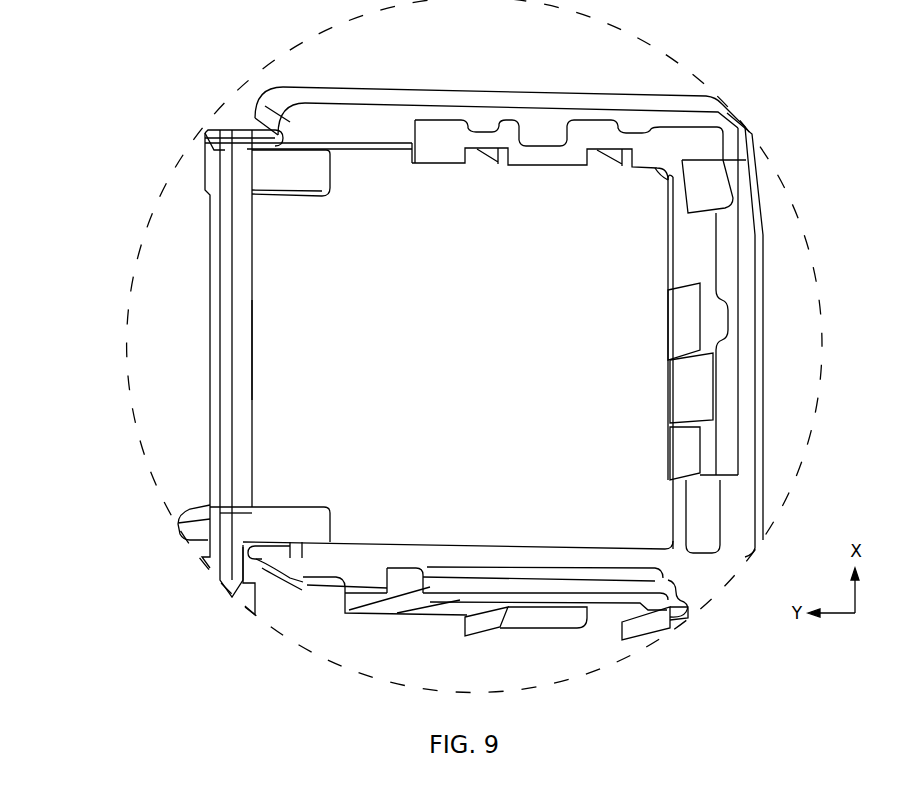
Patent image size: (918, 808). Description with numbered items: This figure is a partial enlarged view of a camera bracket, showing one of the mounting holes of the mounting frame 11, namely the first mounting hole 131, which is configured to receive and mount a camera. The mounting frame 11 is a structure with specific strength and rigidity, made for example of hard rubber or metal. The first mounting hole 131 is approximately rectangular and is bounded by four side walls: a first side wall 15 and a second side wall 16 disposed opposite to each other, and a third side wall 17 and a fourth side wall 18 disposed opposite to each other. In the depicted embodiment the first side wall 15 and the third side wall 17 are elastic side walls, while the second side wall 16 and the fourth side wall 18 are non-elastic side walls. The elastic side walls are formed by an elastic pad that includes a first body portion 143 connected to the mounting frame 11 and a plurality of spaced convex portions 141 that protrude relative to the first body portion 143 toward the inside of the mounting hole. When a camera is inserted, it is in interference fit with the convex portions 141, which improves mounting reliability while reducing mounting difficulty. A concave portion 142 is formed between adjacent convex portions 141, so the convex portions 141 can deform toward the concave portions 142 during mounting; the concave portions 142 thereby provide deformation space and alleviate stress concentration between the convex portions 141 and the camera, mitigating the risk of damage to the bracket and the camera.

The mounting frame 11 is at (229, 123).
The first side wall 15 is at (372, 97).
The convex portion 141 is at (550, 142).
The concave portion 142 is at (480, 155).
The first body portion 143 is at (703, 79).
The third side wall 17 is at (757, 290).
The fourth side wall 18 is at (240, 330).
The first mounting hole 131 is at (273, 391).
The second side wall 16 is at (628, 563).